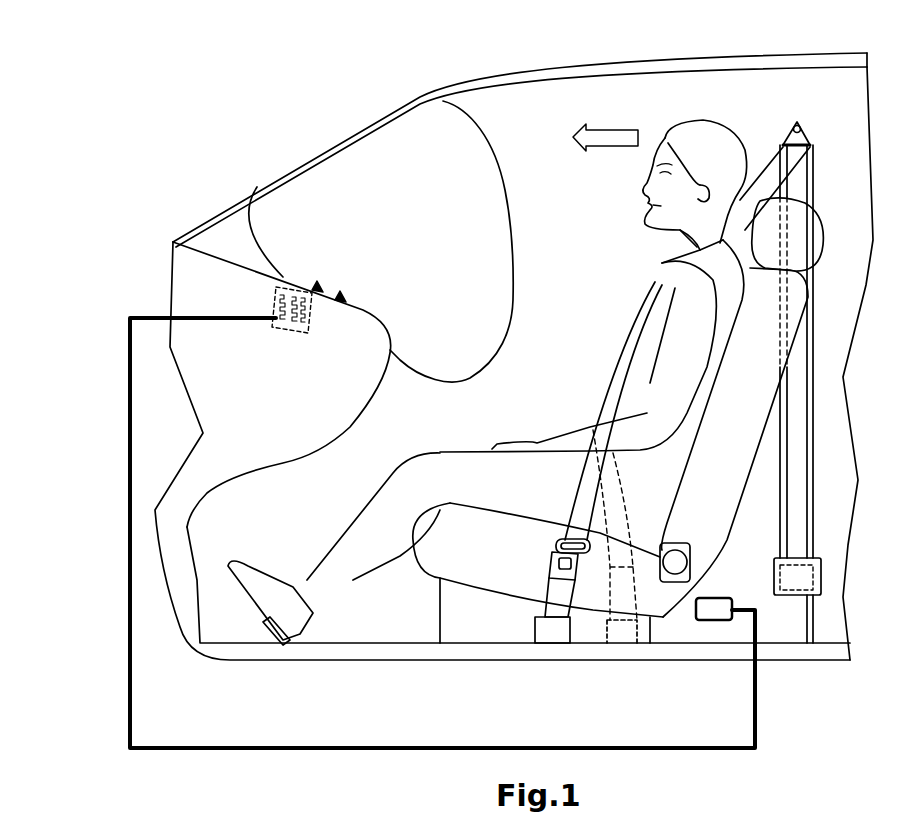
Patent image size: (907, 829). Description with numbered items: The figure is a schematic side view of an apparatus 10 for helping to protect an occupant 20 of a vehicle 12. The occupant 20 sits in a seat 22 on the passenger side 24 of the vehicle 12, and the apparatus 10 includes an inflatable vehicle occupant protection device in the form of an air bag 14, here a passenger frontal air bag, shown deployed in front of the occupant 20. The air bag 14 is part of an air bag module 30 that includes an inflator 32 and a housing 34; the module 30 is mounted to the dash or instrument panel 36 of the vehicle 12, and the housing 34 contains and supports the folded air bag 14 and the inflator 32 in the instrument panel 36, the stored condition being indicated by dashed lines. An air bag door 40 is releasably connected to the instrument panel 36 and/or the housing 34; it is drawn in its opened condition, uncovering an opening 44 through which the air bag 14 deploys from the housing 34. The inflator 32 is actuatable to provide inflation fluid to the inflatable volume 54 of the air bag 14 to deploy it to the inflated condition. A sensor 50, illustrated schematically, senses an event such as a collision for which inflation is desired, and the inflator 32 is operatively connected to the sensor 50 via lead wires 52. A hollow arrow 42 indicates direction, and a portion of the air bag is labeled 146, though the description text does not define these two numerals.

The apparatus 10 is at (200, 184).
The vehicle 12 is at (205, 126).
The inflatable vehicle occupant protection device 14 is at (490, 266).
The occupant 20 is at (693, 148).
The seat 22 is at (750, 355).
The passenger side 24 is at (547, 139).
The air bag module 30 is at (267, 296).
The inflator 32 is at (290, 327).
The housing 34 is at (300, 330).
The instrument panel 36 is at (338, 415).
The air bag door 40 is at (260, 270).
The direction of occupant movement 42 is at (605, 126).
The opening 44 is at (308, 282).
The sensor 50 is at (712, 612).
The lead wires 52 is at (245, 747).
The inflatable volume 54 is at (446, 186).
The occupant-facing panel of air bag 146 is at (463, 210).